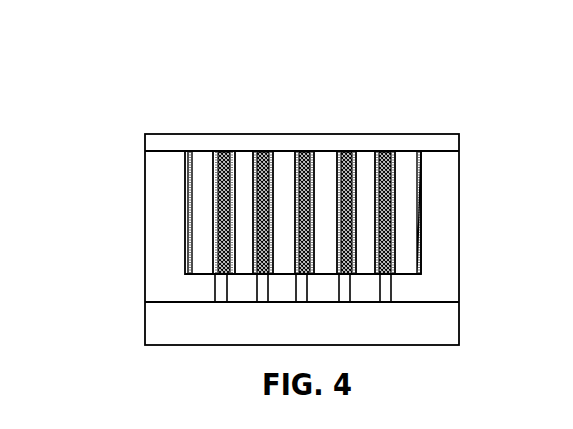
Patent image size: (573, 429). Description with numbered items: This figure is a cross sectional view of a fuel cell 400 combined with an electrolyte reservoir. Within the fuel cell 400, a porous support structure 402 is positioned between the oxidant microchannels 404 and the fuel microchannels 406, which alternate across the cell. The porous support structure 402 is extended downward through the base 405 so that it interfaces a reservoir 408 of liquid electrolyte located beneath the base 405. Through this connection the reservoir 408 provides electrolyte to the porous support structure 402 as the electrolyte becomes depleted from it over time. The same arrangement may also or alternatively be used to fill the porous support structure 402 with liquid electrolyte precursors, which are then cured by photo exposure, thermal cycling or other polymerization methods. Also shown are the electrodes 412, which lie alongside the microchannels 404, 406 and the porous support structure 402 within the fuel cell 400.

The fuel cell 400 is at (148, 80).
The porous support structure 402 is at (353, 155).
The oxidant microchannel 404 is at (199, 152).
The base 405 is at (145, 232).
The fuel microchannel 406 is at (242, 166).
The reservoir 408 is at (459, 323).
The electrodes 412 is at (275, 195).